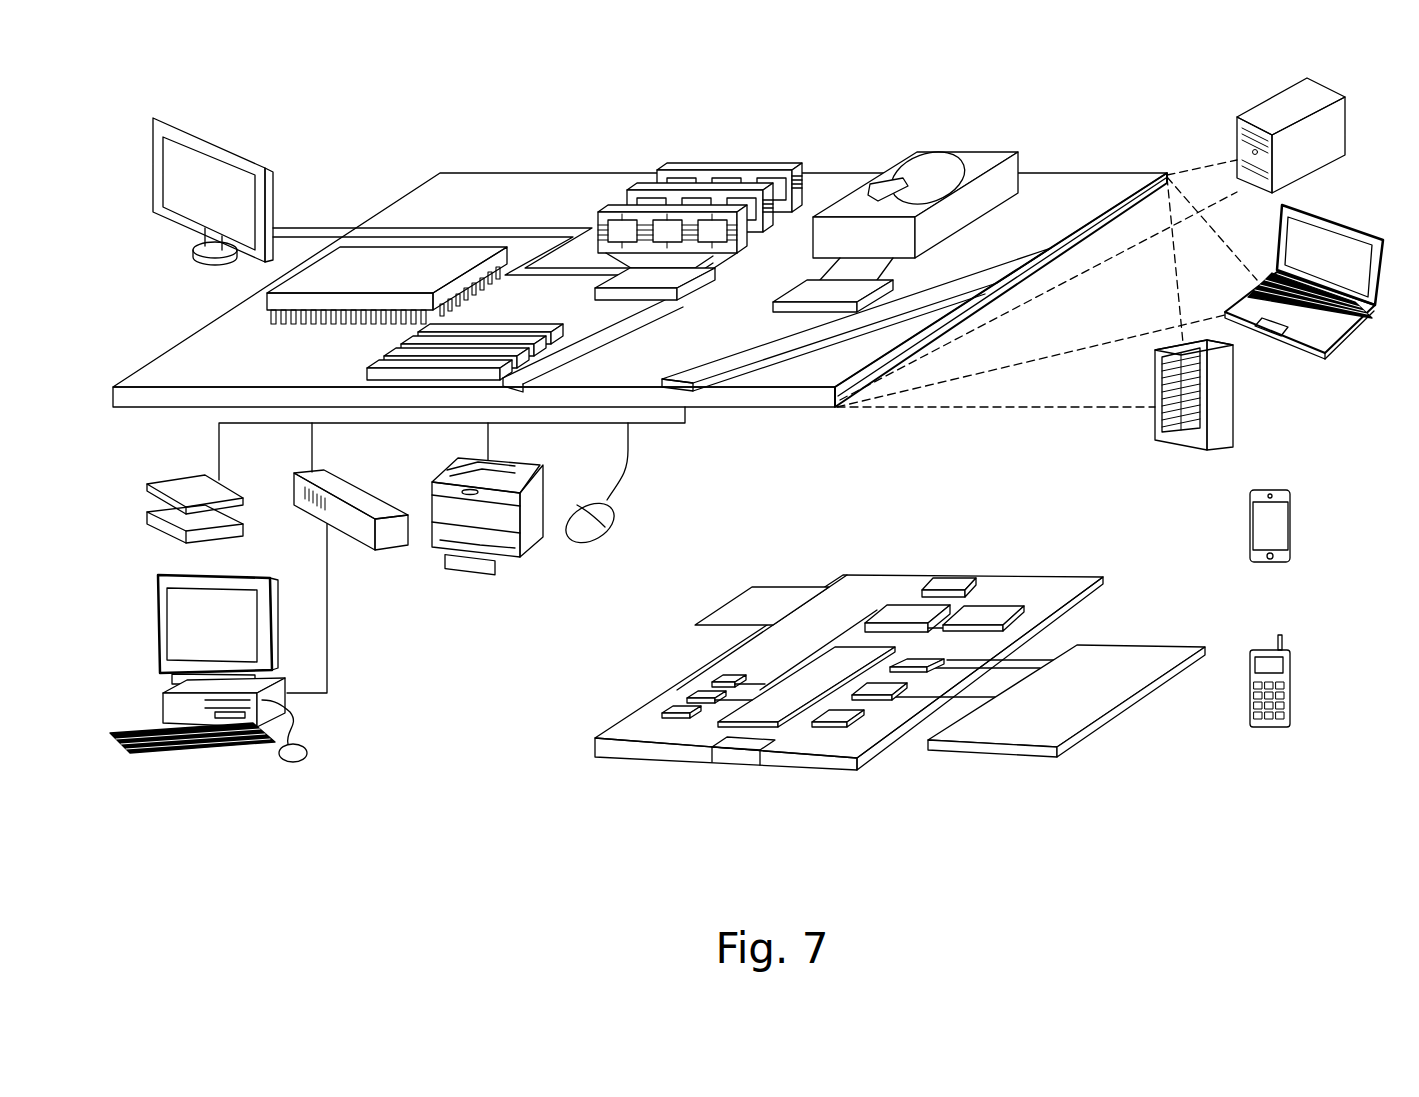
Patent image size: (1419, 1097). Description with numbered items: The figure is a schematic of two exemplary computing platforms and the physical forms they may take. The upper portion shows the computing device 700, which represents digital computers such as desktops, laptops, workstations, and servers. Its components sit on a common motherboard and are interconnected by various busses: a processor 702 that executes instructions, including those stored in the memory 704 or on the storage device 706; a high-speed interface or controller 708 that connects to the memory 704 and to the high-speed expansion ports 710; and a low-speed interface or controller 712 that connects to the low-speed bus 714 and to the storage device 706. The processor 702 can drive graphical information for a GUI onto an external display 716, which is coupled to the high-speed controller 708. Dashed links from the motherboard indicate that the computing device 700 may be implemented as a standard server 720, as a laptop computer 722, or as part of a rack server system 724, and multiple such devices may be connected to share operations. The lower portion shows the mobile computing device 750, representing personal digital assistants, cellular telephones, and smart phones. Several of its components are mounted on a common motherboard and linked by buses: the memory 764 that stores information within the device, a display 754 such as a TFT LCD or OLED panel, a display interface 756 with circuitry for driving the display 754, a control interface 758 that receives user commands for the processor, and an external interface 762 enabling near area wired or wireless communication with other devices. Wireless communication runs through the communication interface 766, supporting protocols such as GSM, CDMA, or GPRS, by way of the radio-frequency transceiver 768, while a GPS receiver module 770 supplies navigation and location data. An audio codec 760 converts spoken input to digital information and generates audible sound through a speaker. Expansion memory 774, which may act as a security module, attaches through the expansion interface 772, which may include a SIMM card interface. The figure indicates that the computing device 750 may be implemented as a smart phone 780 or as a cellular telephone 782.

The computing device 700 is at (403, 115).
The processor 702 is at (275, 279).
The memory 704 is at (730, 168).
The storage device 706 is at (965, 150).
The high-speed interface or controller 708 is at (672, 297).
The high-speed expansion ports 710 is at (385, 347).
The low-speed interface or controller 712 is at (835, 294).
The low-speed bus 714 is at (697, 358).
The display 716 is at (230, 143).
The standard server 720 is at (1280, 98).
The laptop computer 722 is at (1354, 228).
The rack server system 724 is at (1237, 414).
The computing device 750 is at (572, 770).
The display 754 is at (1113, 660).
The display interface 756 is at (838, 722).
The control interface 758 is at (883, 700).
The audio codec 760 is at (927, 672).
The external interface 762 is at (745, 740).
The memory 764 is at (687, 697).
The communication interface 766 is at (900, 603).
The transceiver 768 is at (1007, 605).
The GPS receiver module 770 is at (955, 585).
The expansion interface 772 is at (828, 588).
The expansion memory 774 is at (748, 586).
The smart phone 780 is at (1292, 526).
The cellular telephone 782 is at (1292, 670).